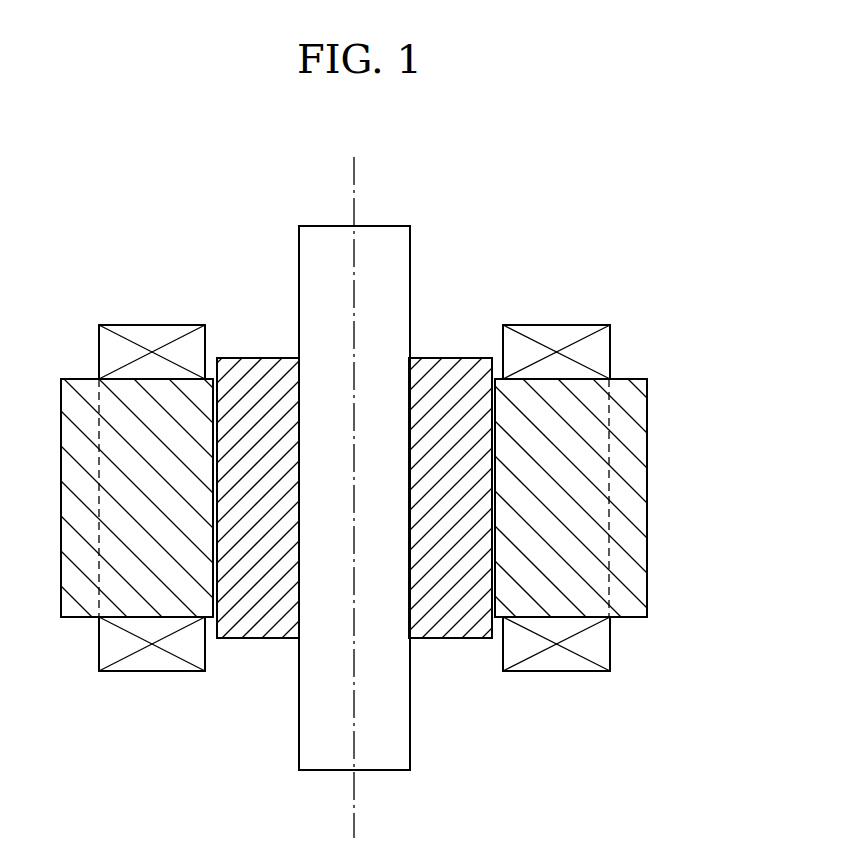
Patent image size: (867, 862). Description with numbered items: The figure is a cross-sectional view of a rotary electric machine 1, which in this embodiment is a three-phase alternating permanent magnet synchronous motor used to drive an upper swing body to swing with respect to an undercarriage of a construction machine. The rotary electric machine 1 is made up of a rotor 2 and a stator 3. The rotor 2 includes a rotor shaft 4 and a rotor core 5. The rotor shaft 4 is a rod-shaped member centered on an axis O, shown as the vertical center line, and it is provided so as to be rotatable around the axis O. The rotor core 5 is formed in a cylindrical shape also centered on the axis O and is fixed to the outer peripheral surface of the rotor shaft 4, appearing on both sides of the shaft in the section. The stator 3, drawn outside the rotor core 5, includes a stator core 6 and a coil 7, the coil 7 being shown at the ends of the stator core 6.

The rotary electric machine 1 is at (657, 215).
The rotor 2 is at (297, 225).
The stator 3 is at (98, 672).
The rotor shaft 4 is at (410, 770).
The rotor core 5 is at (447, 367).
The stator core 6 is at (647, 617).
The coil 7 is at (610, 325).
The axis O is at (355, 183).